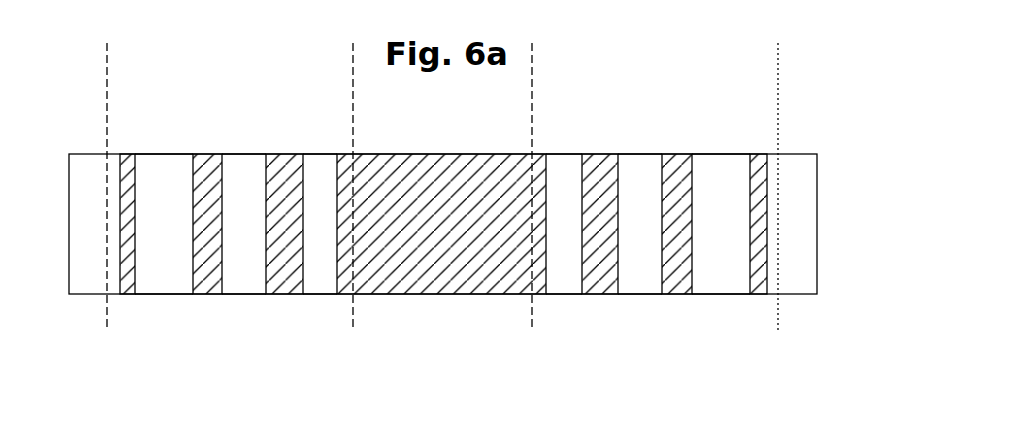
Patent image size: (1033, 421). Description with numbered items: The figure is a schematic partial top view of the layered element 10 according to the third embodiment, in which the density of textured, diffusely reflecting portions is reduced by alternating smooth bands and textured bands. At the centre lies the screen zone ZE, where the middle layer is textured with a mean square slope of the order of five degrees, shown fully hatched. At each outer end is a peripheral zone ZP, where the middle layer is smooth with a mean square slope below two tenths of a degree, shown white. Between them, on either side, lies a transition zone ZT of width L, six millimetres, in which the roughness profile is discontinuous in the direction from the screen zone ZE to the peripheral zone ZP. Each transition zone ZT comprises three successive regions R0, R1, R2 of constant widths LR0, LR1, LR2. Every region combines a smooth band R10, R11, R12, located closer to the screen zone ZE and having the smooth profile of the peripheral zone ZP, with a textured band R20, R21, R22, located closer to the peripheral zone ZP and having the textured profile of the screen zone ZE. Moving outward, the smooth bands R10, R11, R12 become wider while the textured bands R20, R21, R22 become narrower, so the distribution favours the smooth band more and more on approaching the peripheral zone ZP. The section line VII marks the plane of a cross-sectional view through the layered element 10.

The layered element 10 is at (719, 77).
The smooth band of region R0 R10 is at (326, 165).
The smooth band of region R1 R11 is at (245, 163).
The smooth band of region R2 R12 is at (159, 163).
The textured band of region R0 R20 is at (283, 165).
The textured band of region R1 R21 is at (207, 165).
The textured band of region R2 R22 is at (125, 165).
The width of transition zone L is at (353, 52).
The width of region R0 LR0 is at (337, 304).
The width of region R1 LR1 is at (266, 304).
The width of region R2 LR2 is at (193, 304).
The first region of transition zone R0 is at (618, 300).
The second region of transition zone R1 is at (692, 300).
The third region of transition zone R2 is at (767, 300).
The peripheral zone ZP is at (107, 340).
The transition zone ZT is at (351, 340).
The screen zone ZE is at (530, 337).
The section line VII is at (112, 208).